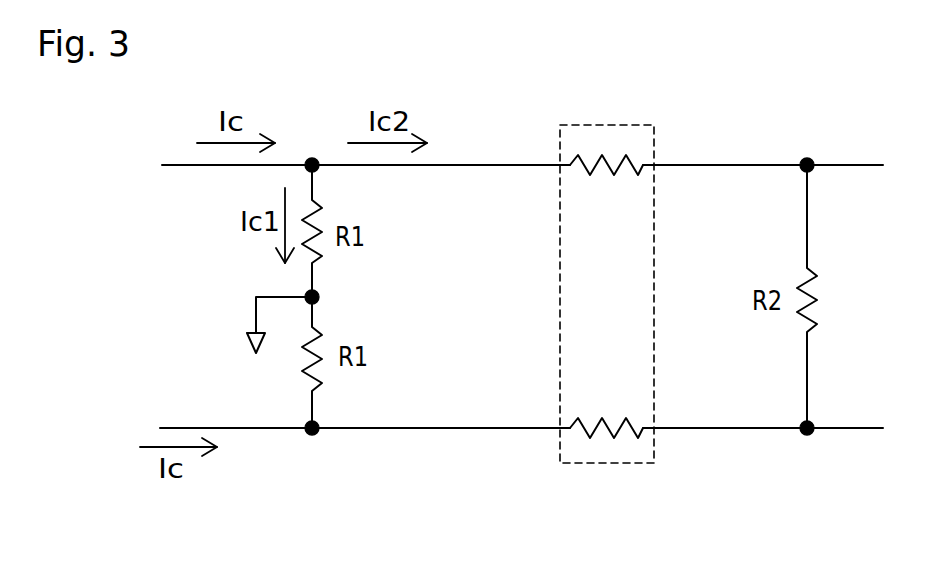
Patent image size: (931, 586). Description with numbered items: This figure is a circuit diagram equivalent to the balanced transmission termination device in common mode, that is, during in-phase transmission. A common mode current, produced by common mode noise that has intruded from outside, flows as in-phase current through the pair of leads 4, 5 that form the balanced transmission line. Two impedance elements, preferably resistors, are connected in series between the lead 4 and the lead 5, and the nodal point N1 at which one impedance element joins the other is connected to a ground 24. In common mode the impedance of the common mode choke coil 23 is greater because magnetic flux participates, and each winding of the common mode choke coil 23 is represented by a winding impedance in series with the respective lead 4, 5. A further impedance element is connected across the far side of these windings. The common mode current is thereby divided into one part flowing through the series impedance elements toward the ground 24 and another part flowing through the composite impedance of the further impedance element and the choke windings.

The lead 4 is at (192, 165).
The lead 5 is at (267, 430).
The common mode choke coil 23 is at (610, 465).
The ground 24 is at (243, 347).
The nodal point N1 is at (318, 293).